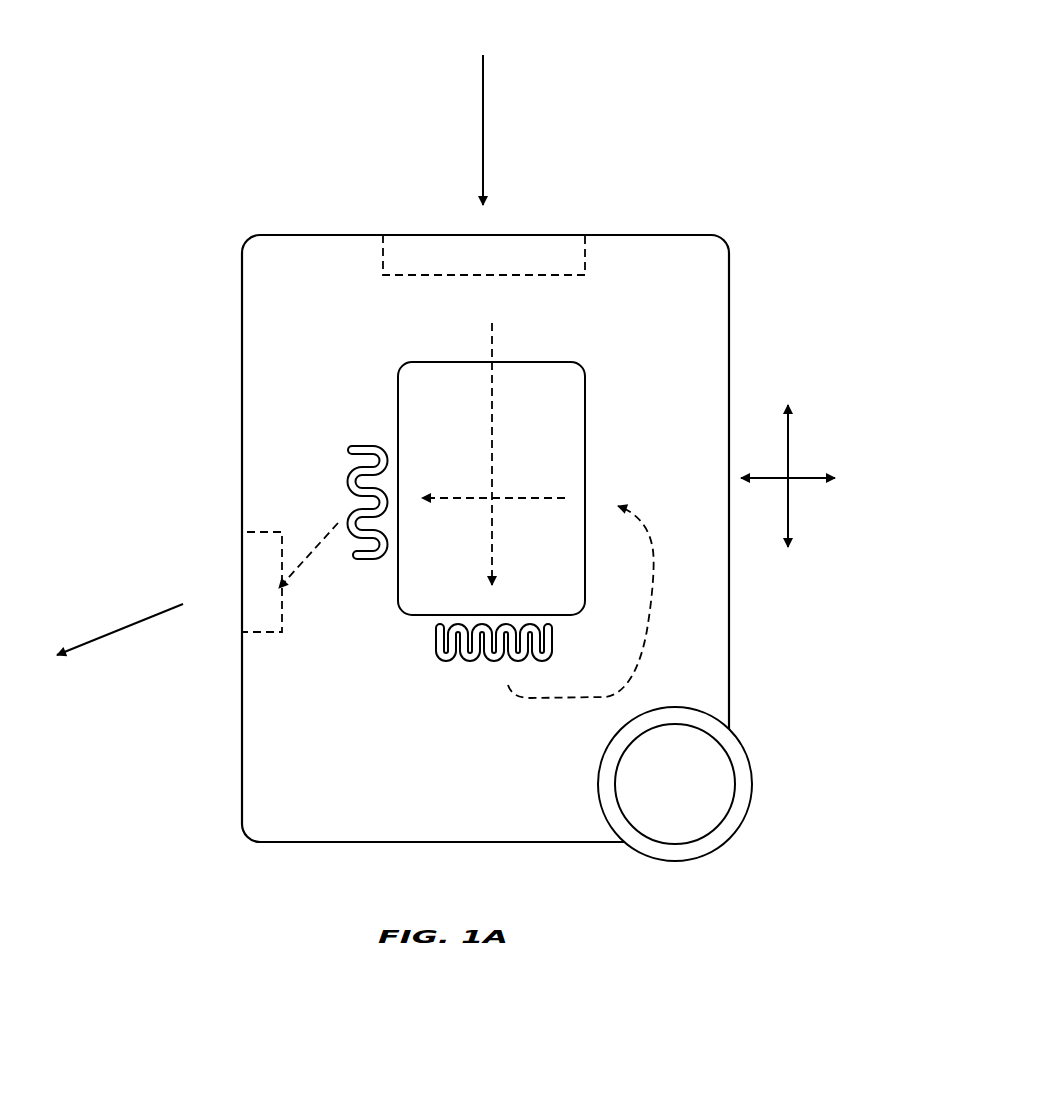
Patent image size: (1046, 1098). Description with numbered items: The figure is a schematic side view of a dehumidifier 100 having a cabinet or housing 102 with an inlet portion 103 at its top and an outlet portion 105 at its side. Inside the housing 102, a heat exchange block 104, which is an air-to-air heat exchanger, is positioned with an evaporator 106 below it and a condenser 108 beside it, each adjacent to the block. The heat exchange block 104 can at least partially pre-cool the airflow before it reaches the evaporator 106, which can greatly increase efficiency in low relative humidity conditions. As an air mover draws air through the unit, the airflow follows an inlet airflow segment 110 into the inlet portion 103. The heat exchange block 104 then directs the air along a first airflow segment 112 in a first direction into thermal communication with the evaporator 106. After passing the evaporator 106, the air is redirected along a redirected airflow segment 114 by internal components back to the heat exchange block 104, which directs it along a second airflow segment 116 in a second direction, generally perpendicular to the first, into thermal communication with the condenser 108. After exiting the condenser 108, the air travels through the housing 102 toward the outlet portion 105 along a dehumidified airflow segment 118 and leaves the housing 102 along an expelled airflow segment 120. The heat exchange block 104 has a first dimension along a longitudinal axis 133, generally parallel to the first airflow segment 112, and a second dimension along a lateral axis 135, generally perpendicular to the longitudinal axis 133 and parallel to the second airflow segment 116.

The dehumidifier 100 is at (715, 106).
The housing 102 is at (729, 290).
The inlet portion 103 is at (586, 246).
The heat exchange block 104 is at (585, 403).
The outlet portion 105 is at (260, 635).
The evaporator 106 is at (445, 663).
The condenser 108 is at (372, 445).
The inlet airflow segment 110 is at (483, 133).
The first airflow segment 112 is at (492, 345).
The redirected airflow segment 114 is at (640, 643).
The second airflow segment 116 is at (545, 497).
The dehumidified airflow segment 118 is at (325, 538).
The expelled airflow segment 120 is at (118, 630).
The longitudinal axis 133 is at (788, 421).
The lateral axis 135 is at (800, 478).